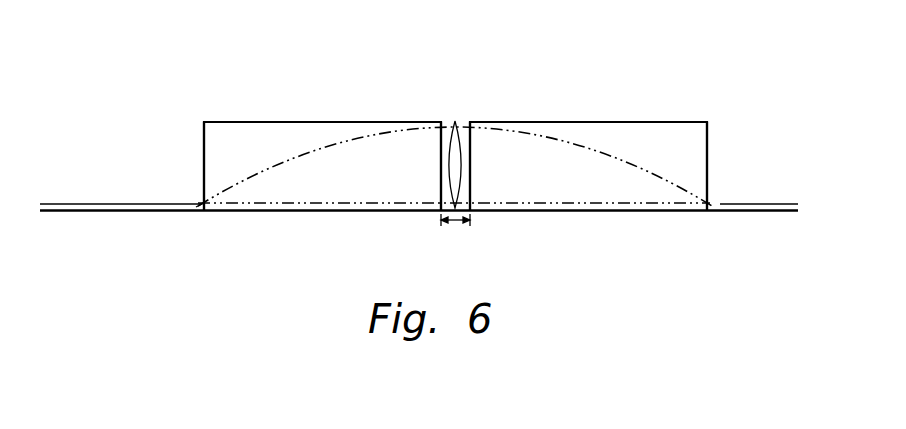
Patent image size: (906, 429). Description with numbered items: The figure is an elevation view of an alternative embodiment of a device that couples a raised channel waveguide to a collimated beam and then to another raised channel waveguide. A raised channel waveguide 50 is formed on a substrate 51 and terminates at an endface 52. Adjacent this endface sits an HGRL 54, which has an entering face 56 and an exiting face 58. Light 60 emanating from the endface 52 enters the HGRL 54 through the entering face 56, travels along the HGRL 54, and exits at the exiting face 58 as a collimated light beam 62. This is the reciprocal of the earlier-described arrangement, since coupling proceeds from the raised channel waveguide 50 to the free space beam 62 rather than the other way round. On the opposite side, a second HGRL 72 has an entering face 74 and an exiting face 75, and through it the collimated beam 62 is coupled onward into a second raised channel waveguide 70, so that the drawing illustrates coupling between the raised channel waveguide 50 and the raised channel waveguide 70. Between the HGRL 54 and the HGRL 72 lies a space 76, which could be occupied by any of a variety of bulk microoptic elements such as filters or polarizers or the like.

The raised channel waveguide 50 is at (80, 204).
The substrate 51 is at (112, 240).
The endface 52 is at (197, 212).
The HGRL 54 is at (313, 122).
The entering face 56 is at (204, 158).
The exiting face 58 is at (441, 180).
The light 60 is at (200, 210).
The collimated light beam 62 is at (450, 127).
The raised channel waveguide 70 is at (765, 203).
The HGRL 72 is at (580, 122).
The entering face 74 is at (470, 185).
The exiting face 75 is at (707, 160).
The space 76 is at (447, 225).